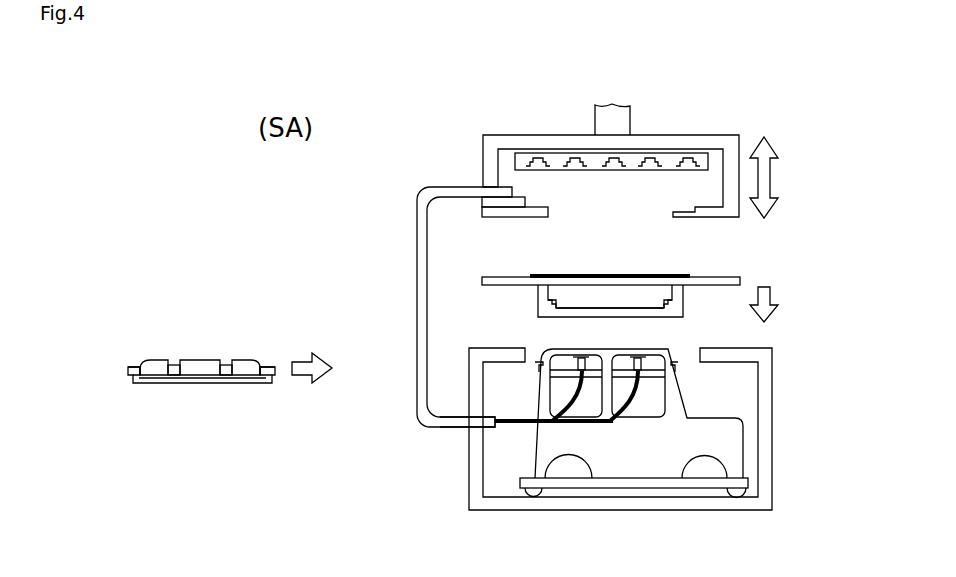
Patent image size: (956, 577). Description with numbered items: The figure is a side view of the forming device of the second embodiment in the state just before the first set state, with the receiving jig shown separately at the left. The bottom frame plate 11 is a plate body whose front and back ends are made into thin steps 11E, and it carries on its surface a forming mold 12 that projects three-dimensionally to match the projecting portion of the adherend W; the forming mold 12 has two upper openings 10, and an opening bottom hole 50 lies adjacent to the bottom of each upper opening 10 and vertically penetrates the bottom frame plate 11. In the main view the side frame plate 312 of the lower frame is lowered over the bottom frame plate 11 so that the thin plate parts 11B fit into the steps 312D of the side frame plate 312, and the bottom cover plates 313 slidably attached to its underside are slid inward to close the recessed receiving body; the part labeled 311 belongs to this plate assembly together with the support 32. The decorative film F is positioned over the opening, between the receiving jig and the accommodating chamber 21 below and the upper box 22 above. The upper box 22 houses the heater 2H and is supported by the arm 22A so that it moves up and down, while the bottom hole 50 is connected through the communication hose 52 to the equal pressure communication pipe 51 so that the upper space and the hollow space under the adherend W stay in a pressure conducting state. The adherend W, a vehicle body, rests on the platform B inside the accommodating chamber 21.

The upper box 22 is at (482, 155).
The arm 22A is at (618, 118).
The heater 2H is at (662, 168).
The support portion 32 is at (510, 218).
The equal pressure communication pipe 51 is at (417, 366).
The communication hose 52 is at (516, 424).
The tray plate 311 is at (492, 288).
The decorative film F is at (610, 273).
The side frame plate 312 is at (538, 302).
The steps 312D is at (556, 298).
The bottom cover plates 313 is at (650, 317).
The accommodating chamber 21 is at (769, 424).
The adherend W is at (518, 430).
The platform B is at (705, 490).
The thin plate parts 11B is at (533, 372).
The bottom frame plate 11 is at (205, 388).
The thin steps 11E is at (133, 367).
The forming mold 12 is at (158, 360).
The upper openings 10 is at (178, 360).
The bottom hole 50 is at (175, 385).